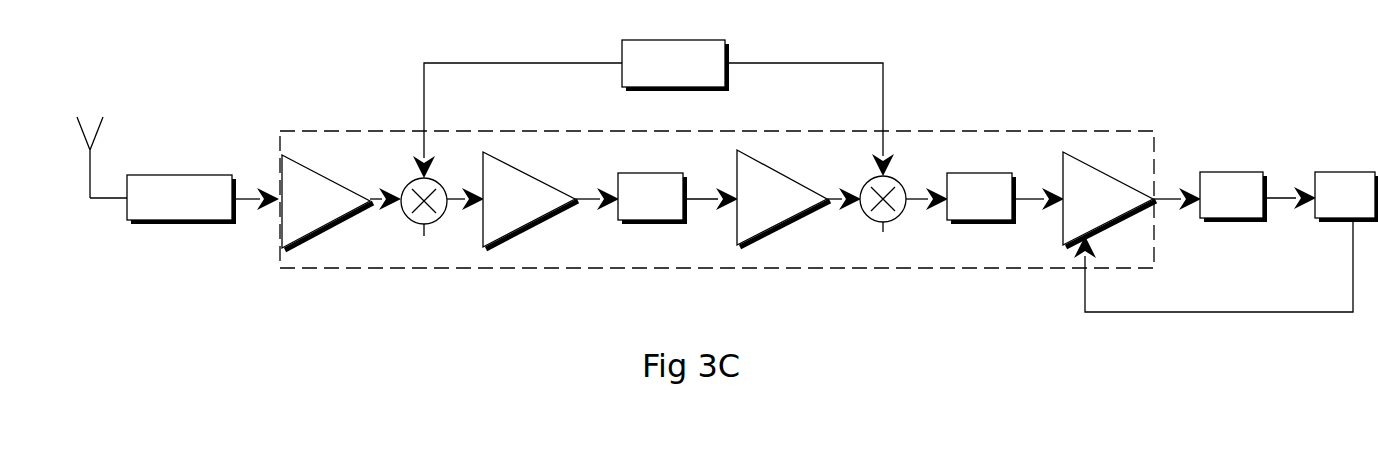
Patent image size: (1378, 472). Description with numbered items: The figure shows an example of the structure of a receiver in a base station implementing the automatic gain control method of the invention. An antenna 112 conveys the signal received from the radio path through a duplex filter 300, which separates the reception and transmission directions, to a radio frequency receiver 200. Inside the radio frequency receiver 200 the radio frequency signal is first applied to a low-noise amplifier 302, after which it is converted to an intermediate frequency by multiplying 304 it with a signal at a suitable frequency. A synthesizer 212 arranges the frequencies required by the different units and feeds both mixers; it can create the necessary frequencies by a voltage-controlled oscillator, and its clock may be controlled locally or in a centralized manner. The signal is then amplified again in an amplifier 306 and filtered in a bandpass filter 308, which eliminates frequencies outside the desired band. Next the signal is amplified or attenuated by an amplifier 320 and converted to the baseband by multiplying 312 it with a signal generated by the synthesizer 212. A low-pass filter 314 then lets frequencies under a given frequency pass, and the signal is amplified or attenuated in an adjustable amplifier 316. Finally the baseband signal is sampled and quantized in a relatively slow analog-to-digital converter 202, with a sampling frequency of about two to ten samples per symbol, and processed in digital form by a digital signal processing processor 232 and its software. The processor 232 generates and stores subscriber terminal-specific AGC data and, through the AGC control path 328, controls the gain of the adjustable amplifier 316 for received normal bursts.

The antenna 112 is at (83, 175).
The duplex filter 300 is at (193, 174).
The radio frequency receiver 200 is at (378, 130).
The low-noise amplifier 302 is at (324, 172).
The multiplier 304 is at (424, 223).
The amplifier 306 is at (524, 168).
The bandpass filter 308 is at (670, 172).
The amplifier 320 is at (779, 168).
The multiplier 312 is at (883, 220).
The low-pass filter 314 is at (1000, 172).
The adjustable amplifier 316 is at (1104, 168).
The analog-to-digital converter 202 is at (1250, 172).
The digital signal processing processor 232 is at (1368, 172).
The AGC control means 328 is at (1213, 277).
The synthesizer 212 is at (656, 90).